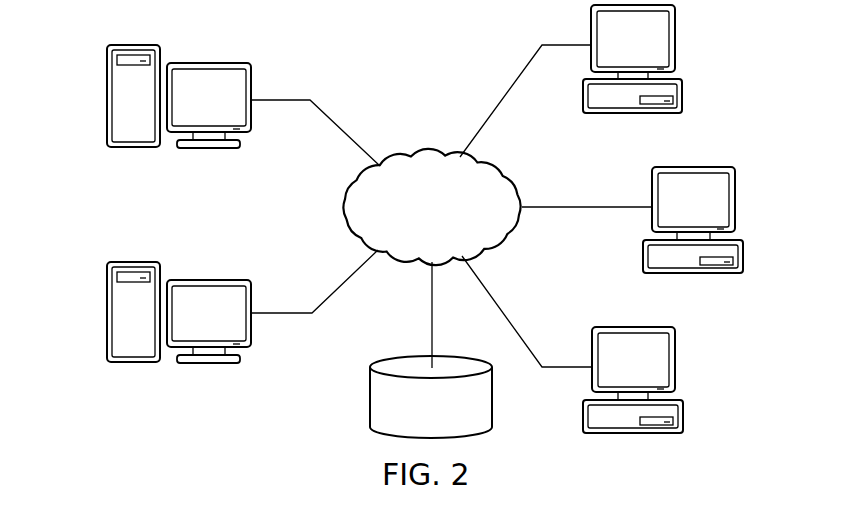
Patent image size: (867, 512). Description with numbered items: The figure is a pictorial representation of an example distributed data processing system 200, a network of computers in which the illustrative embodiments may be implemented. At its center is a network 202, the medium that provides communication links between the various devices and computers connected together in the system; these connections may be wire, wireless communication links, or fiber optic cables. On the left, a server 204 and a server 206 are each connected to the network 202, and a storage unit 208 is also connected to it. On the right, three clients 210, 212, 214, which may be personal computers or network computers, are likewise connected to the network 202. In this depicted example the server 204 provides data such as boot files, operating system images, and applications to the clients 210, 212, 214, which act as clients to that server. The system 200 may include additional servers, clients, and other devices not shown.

The distributed data processing system 200 is at (315, 60).
The network 202 is at (425, 153).
The server 204 is at (106, 98).
The server 206 is at (106, 313).
The storage unit 208 is at (370, 396).
The client 210 is at (684, 95).
The client 212 is at (745, 256).
The client 214 is at (685, 418).